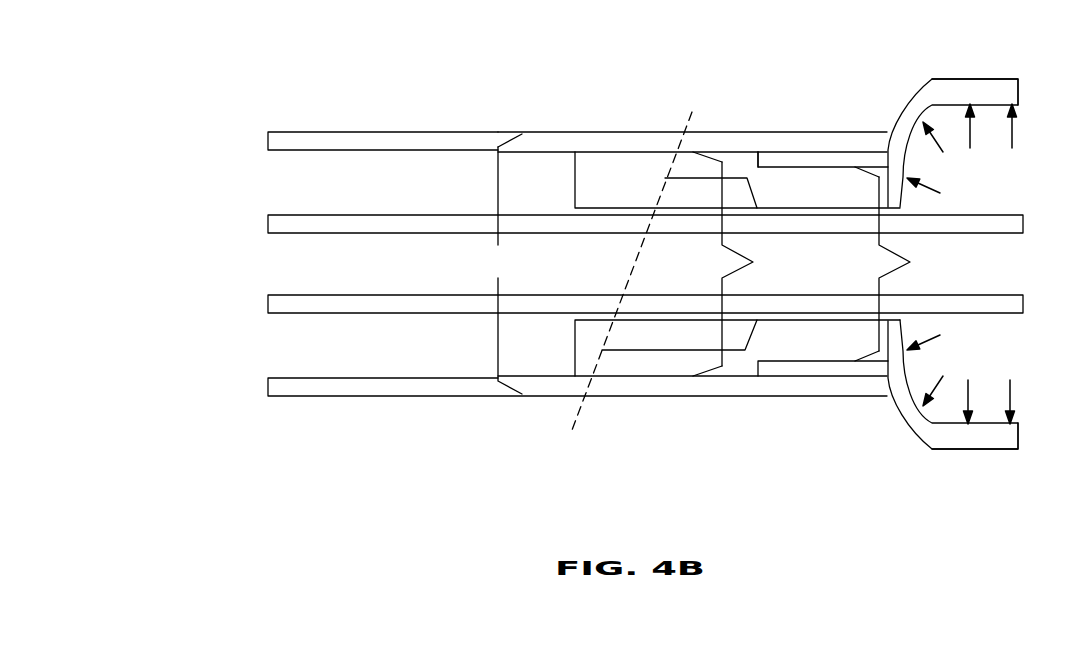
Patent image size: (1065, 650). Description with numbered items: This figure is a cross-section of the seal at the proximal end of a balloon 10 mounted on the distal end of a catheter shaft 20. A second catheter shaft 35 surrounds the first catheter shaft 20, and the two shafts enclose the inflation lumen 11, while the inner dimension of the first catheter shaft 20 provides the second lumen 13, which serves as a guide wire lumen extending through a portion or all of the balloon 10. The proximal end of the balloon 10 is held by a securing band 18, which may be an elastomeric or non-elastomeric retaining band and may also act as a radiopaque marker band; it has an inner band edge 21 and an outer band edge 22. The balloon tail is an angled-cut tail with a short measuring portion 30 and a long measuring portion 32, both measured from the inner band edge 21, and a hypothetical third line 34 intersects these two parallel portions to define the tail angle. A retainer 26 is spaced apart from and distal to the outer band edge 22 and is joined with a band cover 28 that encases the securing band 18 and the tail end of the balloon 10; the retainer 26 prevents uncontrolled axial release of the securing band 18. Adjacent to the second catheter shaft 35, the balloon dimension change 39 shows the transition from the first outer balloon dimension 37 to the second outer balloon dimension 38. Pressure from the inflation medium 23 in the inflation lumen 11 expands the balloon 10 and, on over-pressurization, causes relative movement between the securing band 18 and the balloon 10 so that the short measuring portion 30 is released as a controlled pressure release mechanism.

The balloon 10 is at (935, 90).
The inflation lumen 11 is at (268, 178).
The second lumen 13 is at (243, 265).
The securing band 18 is at (812, 377).
The catheter shaft 20 is at (268, 300).
The inner band edge 21 is at (883, 143).
The outer band edge 22 is at (762, 150).
The inflation medium 23 is at (962, 264).
The retainer 26 is at (598, 152).
The band cover 28 is at (837, 132).
The short measuring portion 30 is at (667, 178).
The long measuring portion 32 is at (598, 362).
The third line 34 is at (640, 258).
The second catheter shaft 35 is at (332, 132).
The first outer balloon dimension 37 is at (899, 264).
The second outer balloon dimension 38 is at (754, 264).
The balloon dimension change 39 is at (758, 160).